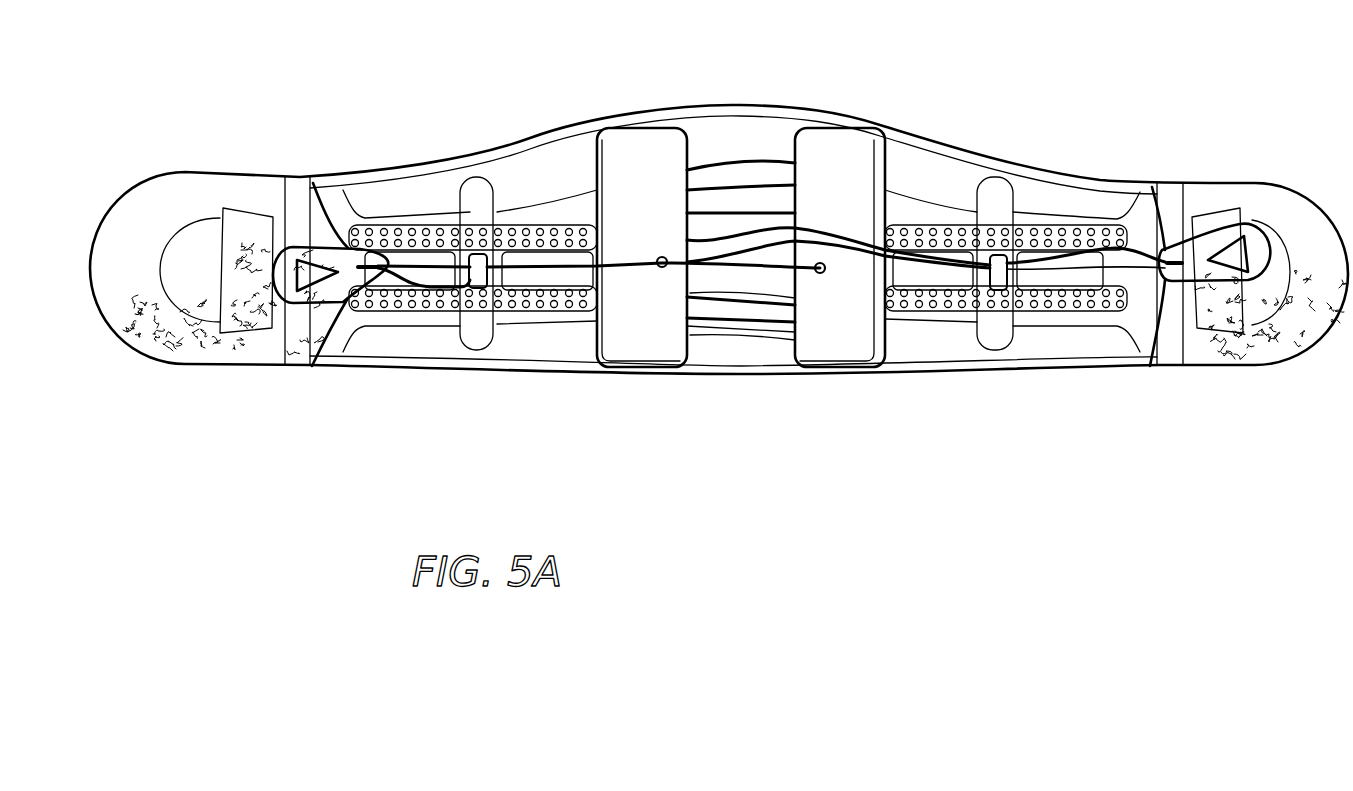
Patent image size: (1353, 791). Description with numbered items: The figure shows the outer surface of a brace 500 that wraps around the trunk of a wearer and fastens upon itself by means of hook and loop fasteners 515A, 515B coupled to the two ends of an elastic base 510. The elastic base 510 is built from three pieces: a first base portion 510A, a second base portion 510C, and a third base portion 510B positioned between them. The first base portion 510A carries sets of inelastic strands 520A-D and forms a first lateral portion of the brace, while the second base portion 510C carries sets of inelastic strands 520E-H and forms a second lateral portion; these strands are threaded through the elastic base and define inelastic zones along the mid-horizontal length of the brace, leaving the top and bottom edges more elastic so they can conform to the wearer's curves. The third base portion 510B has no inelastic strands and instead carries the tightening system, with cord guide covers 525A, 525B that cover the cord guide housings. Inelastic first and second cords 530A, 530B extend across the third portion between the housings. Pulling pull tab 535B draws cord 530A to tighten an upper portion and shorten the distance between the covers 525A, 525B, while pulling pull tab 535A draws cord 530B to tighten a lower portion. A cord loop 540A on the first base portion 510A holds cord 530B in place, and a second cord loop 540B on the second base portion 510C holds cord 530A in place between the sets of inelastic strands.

The brace 500 is at (1147, 54).
The elastic base 510 is at (310, 460).
The first base portion 510A is at (420, 374).
The third base portion 510B is at (760, 372).
The second base portion 510C is at (1048, 372).
The first fastener 515A is at (210, 368).
The second fastener 515B is at (1218, 370).
The sets of inelastic strands 520A-D is at (473, 232).
The sets of inelastic strands 520E-H is at (1042, 305).
The cord guide cover 525A is at (650, 130).
The cord guide cover 525B is at (845, 135).
The first cord 530A is at (780, 163).
The second cord 530B is at (720, 297).
The pull tab 535A is at (306, 246).
The pull tab 535B is at (1245, 228).
The cord loop 540A is at (482, 288).
The second cord loop 540B is at (997, 290).